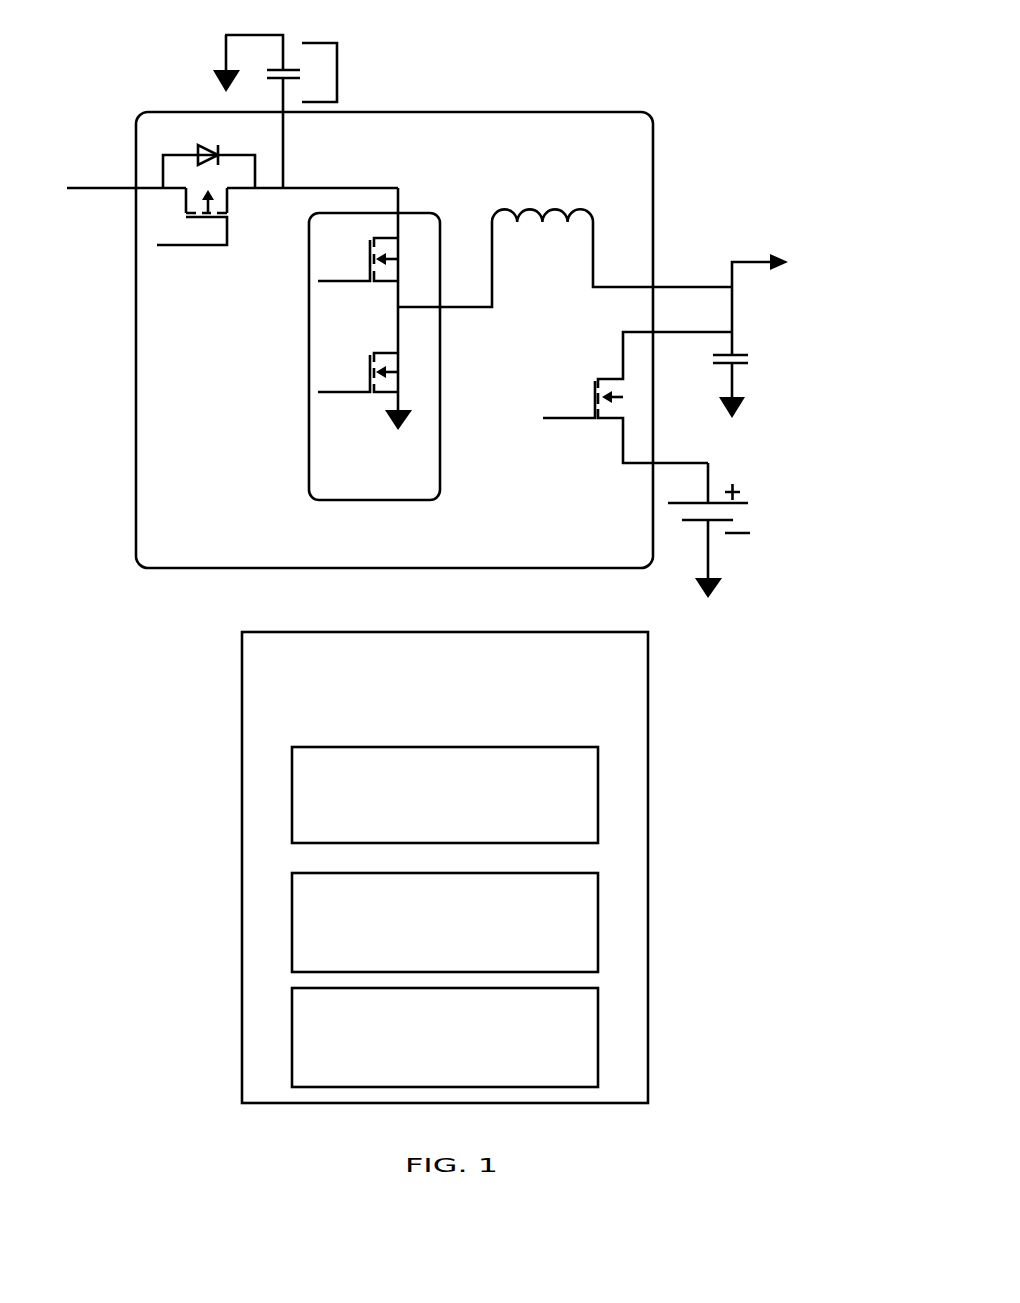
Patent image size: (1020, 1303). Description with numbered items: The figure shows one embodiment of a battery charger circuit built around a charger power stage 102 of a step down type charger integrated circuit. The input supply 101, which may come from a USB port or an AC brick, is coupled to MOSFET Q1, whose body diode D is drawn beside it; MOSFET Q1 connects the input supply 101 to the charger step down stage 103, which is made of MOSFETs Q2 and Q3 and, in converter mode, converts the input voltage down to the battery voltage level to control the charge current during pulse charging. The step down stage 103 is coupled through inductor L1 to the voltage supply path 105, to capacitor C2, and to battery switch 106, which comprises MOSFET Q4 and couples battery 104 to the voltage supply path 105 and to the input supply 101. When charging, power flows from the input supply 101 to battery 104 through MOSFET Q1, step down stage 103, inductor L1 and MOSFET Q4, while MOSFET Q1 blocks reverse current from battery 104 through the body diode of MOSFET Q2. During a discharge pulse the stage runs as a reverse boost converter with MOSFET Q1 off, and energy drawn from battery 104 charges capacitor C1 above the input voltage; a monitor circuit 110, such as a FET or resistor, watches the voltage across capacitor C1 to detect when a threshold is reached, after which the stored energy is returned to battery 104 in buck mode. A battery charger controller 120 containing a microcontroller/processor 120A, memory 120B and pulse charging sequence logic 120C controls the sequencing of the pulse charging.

The input supply VIN 101 is at (126, 188).
The charger power stage 102 is at (520, 179).
The charger step down stage 103 is at (377, 365).
The battery 104 is at (731, 523).
The voltage supply path VSYS 105 is at (765, 279).
The battery switch 106 is at (631, 397).
The monitor circuit 110 is at (349, 108).
The battery charger controller 120 is at (460, 706).
The microcontroller/processor 120A is at (467, 819).
The memory 120B is at (467, 946).
The pulse charging sequence logic 120C is at (467, 1073).
The capacitor C1 is at (271, 111).
The capacitor C2 is at (745, 383).
The inductor L1 is at (565, 248).
The body diode D is at (209, 153).
The MOSFET Q1 is at (277, 216).
The MOSFET Q2 is at (373, 259).
The MOSFET Q3 is at (373, 372).
The MOSFET Q4 is at (637, 397).